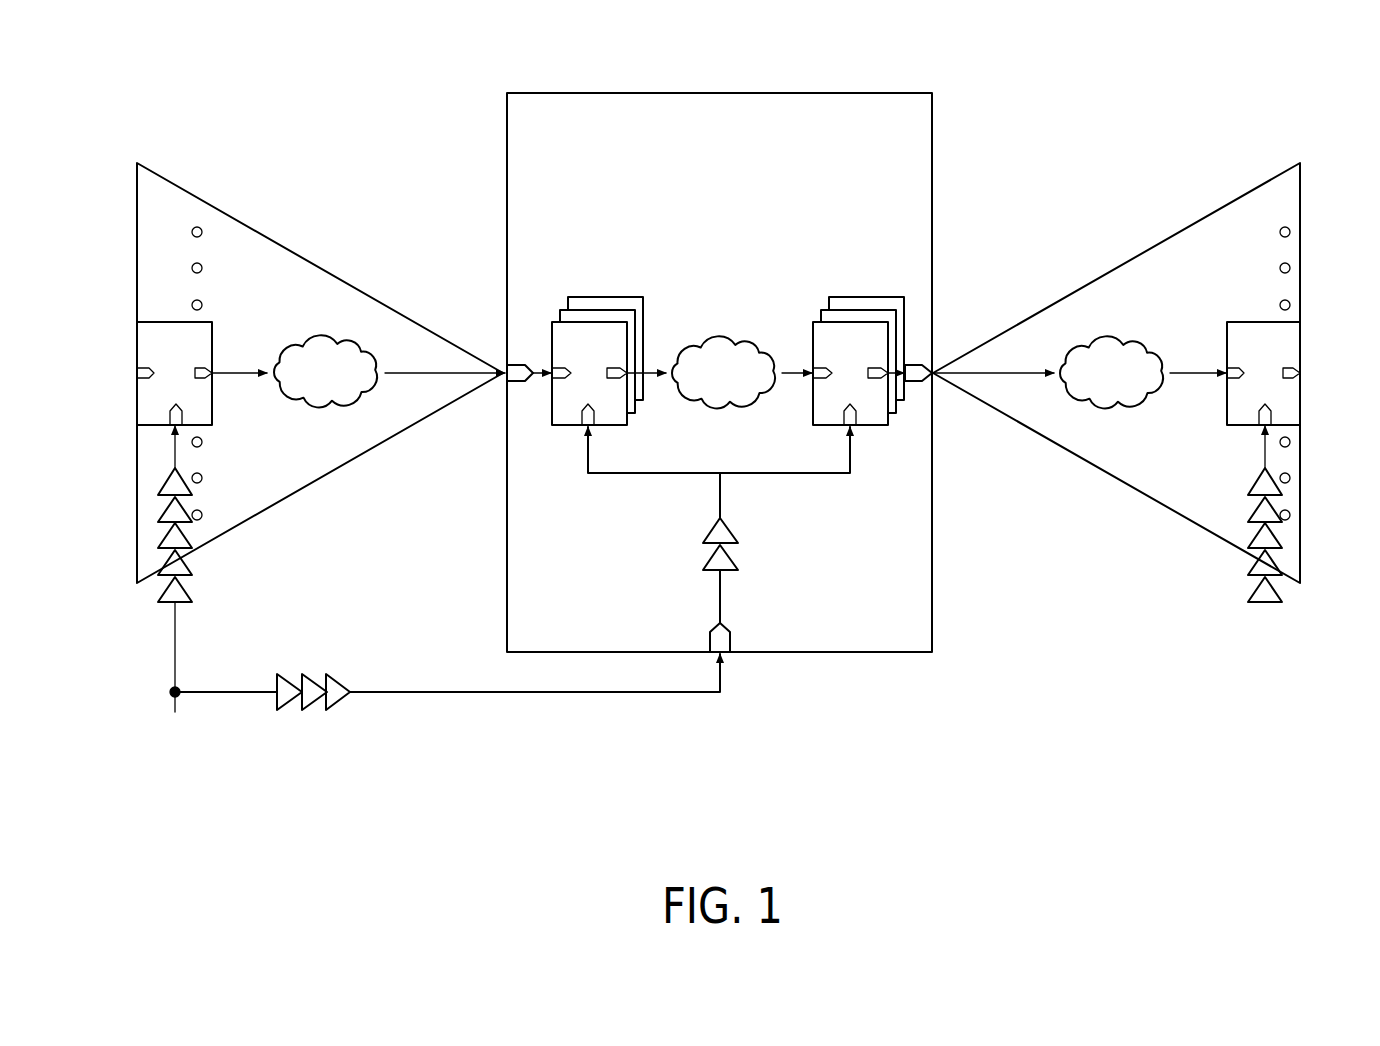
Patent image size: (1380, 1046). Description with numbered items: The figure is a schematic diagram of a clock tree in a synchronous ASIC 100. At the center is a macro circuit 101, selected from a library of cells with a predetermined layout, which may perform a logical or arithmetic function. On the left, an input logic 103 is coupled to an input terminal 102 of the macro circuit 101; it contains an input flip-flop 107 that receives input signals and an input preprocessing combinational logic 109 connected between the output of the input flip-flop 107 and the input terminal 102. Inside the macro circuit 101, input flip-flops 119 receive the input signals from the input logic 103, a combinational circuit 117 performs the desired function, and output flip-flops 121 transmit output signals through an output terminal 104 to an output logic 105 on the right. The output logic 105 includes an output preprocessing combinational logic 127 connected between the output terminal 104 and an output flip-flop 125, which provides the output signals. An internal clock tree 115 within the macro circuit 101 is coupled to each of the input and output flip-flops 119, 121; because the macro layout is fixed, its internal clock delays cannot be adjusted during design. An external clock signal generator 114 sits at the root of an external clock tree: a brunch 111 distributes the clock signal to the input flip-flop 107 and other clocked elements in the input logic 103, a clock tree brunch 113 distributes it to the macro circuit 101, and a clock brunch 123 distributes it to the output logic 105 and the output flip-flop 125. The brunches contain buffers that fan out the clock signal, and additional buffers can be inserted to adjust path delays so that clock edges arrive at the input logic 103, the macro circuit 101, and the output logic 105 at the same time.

The synchronous ASIC 100 is at (268, 60).
The macro circuit 101 is at (855, 93).
The input terminal 102 is at (500, 362).
The input logic 103 is at (165, 187).
The output terminal 104 is at (940, 360).
The output logic 105 is at (1268, 182).
The input flip-flop 107 is at (137, 362).
The input preprocessing combinational logic 109 is at (332, 410).
The clock tree brunch 111 is at (192, 563).
The clock tree brunch 113 is at (312, 710).
The external clock signal generator 114 is at (175, 762).
The internal clock tree 115 is at (703, 557).
The combinational circuit 117 is at (717, 338).
The input flip-flops 119 is at (615, 165).
The output flip-flops 121 is at (873, 165).
The clock tree brunch 123 is at (1248, 560).
The output flip-flop 125 is at (1302, 362).
The output preprocessing combinational logic 127 is at (1092, 410).